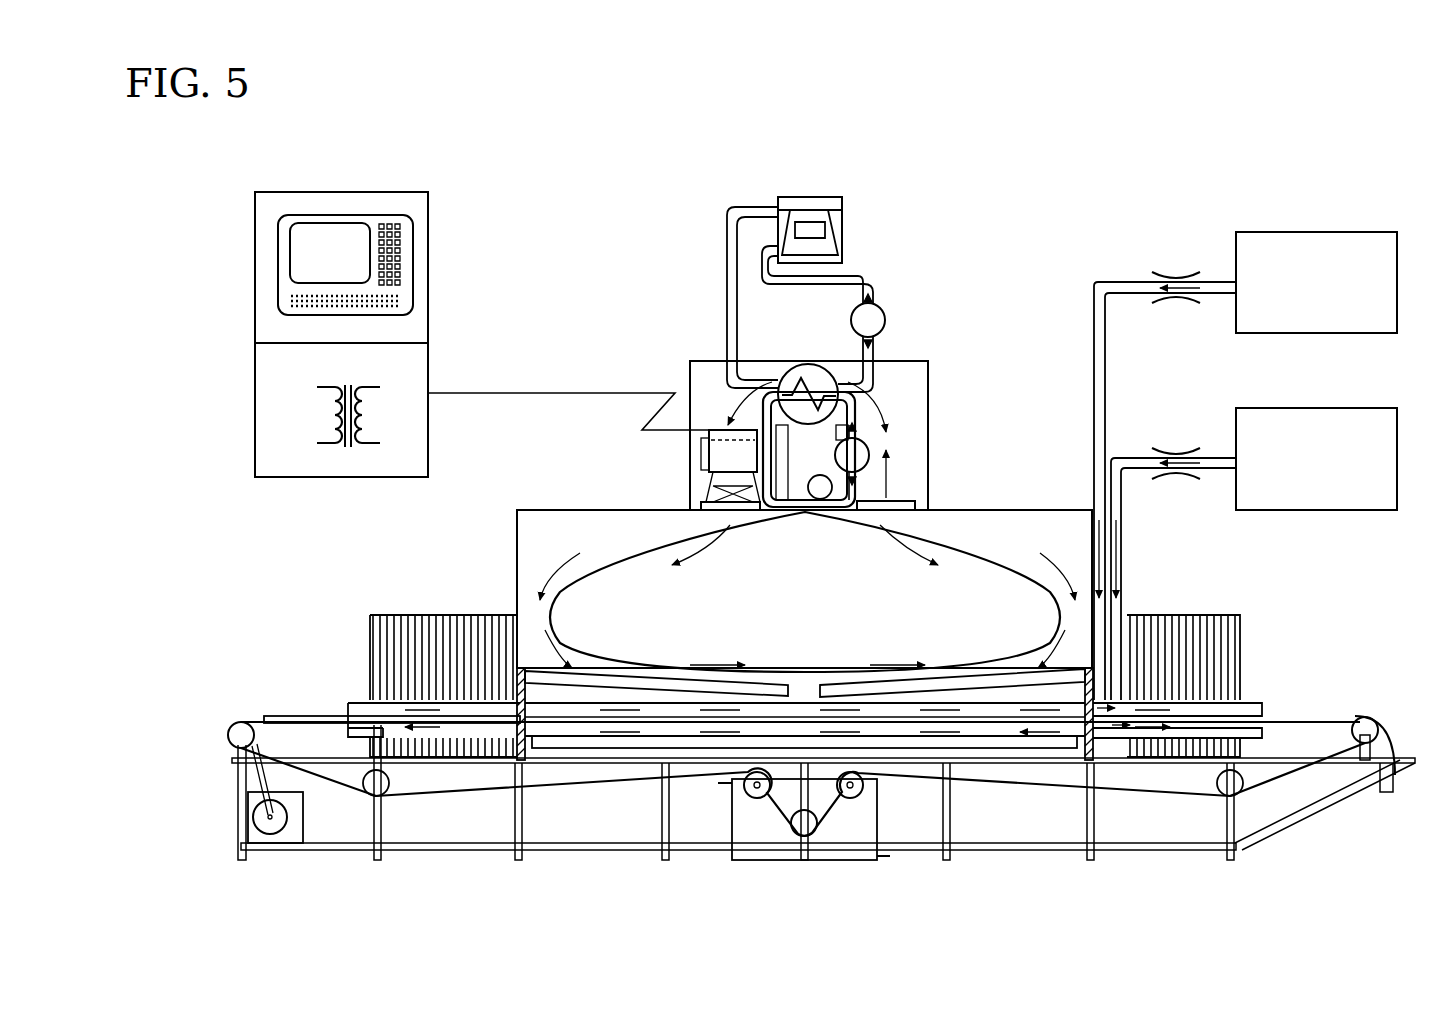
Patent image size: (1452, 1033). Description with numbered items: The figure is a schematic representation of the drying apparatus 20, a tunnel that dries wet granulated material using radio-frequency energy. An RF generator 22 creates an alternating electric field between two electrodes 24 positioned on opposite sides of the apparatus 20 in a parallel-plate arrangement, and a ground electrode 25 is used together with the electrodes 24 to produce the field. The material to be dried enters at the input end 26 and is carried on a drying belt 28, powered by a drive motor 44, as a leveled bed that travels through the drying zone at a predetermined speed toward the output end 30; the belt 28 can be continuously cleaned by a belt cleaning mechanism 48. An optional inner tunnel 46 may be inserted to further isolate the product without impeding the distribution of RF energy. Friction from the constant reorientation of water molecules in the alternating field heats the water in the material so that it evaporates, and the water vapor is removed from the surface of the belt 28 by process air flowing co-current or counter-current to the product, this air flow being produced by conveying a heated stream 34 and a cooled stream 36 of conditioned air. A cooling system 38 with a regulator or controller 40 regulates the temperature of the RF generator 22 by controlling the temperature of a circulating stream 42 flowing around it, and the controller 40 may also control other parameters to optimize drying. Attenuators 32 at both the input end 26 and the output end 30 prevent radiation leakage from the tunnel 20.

The drying apparatus 20 is at (513, 550).
The RF generator 22 is at (838, 460).
The electrodes 24 is at (773, 680).
The ground electrode 25 is at (678, 748).
The input end 26 is at (305, 704).
The drying belt 28 is at (337, 716).
The output end 30 is at (1380, 718).
The attenuators 32 is at (382, 612).
The heated stream of conditioned air 34 is at (1318, 232).
The cooled stream of conditioned air 36 is at (1318, 408).
The cooling system 38 is at (846, 272).
The controller 40 is at (432, 353).
The circulating stream 42 is at (563, 558).
The drive motor 44 is at (286, 845).
The inner tunnel 46 is at (1262, 705).
The belt cleaning mechanism 48 is at (768, 822).